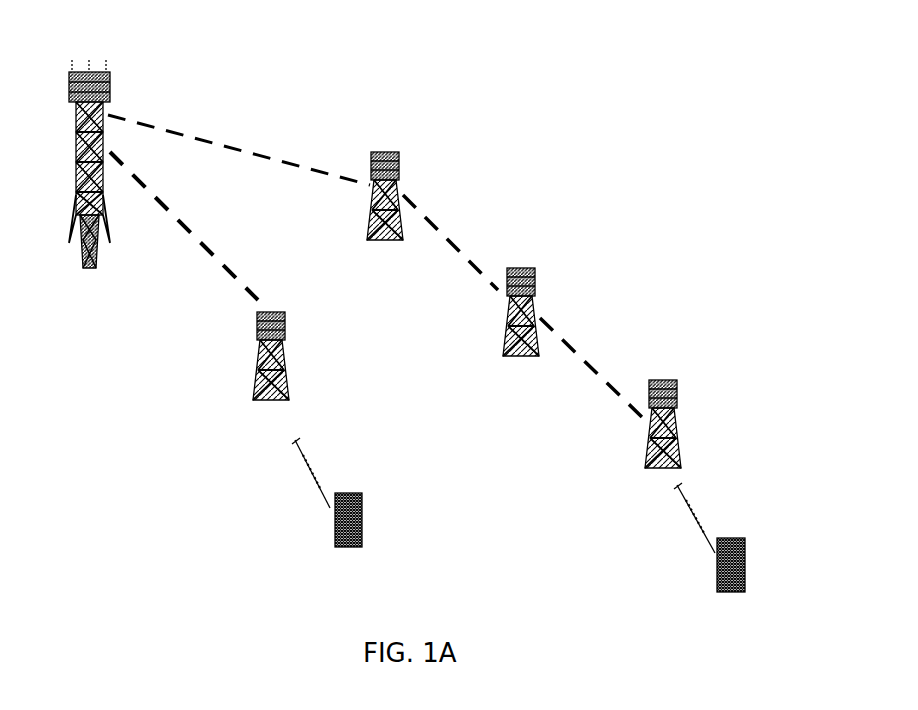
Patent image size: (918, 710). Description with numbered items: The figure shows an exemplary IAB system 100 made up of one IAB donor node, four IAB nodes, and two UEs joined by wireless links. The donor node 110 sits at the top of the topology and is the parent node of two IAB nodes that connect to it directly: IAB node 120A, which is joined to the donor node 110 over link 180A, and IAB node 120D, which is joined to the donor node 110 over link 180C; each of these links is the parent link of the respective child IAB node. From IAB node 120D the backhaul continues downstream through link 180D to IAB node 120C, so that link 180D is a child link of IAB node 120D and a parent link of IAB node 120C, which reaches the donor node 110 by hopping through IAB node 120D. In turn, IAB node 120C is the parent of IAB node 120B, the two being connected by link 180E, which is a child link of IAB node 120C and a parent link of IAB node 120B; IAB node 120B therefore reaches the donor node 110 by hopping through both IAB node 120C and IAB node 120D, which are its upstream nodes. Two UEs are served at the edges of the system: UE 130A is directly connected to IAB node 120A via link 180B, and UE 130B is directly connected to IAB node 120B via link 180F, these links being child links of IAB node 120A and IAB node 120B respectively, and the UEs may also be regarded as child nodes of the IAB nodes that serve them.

The IAB system 100 is at (670, 50).
The donor node 110 is at (110, 70).
The IAB node 120A is at (285, 312).
The IAB node 120B is at (680, 380).
The IAB node 120C is at (538, 268).
The IAB node 120D is at (400, 152).
The UE 130A is at (362, 496).
The UE 130B is at (745, 540).
The link 180A is at (178, 220).
The link 180B is at (302, 452).
The link 180C is at (205, 140).
The link 180D is at (443, 243).
The link 180E is at (585, 365).
The link 180F is at (688, 502).